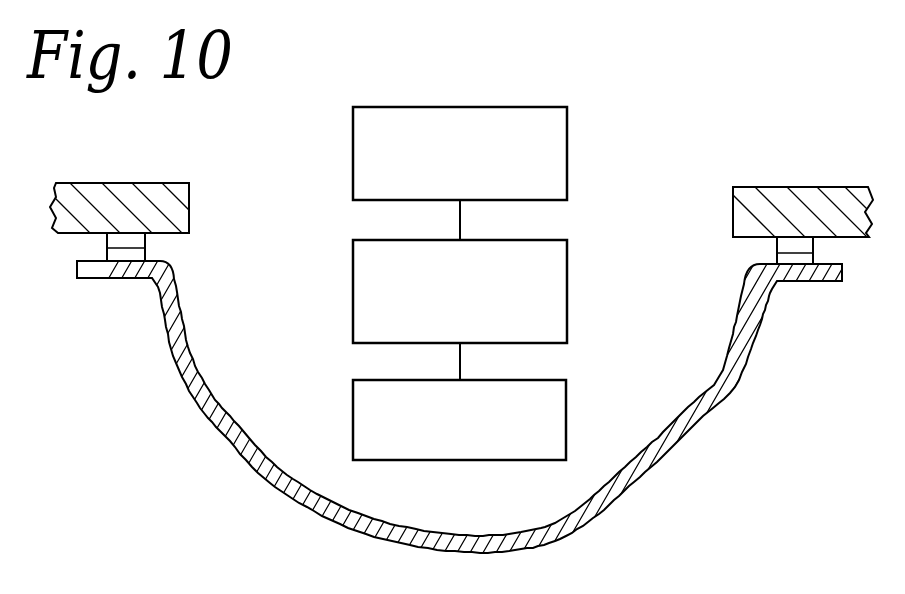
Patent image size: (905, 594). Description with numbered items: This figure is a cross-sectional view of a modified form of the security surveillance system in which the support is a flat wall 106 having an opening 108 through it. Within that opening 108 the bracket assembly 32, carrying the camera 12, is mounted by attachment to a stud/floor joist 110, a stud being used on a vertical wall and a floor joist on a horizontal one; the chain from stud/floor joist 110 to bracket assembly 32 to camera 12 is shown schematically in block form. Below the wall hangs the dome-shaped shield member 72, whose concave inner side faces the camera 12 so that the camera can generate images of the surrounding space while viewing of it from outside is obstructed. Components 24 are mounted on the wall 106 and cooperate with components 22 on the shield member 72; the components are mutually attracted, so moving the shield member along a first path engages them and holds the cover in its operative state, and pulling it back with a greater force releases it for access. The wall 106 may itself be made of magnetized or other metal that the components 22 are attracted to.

The surveillance device 12 is at (446, 450).
The component 22 is at (125, 263).
The component 24 is at (130, 236).
The bracket assembly 32 is at (446, 336).
The shield member 72 is at (673, 467).
The flat wall 106 is at (93, 196).
The opening 108 is at (190, 212).
The stud/floor joist 110 is at (441, 194).